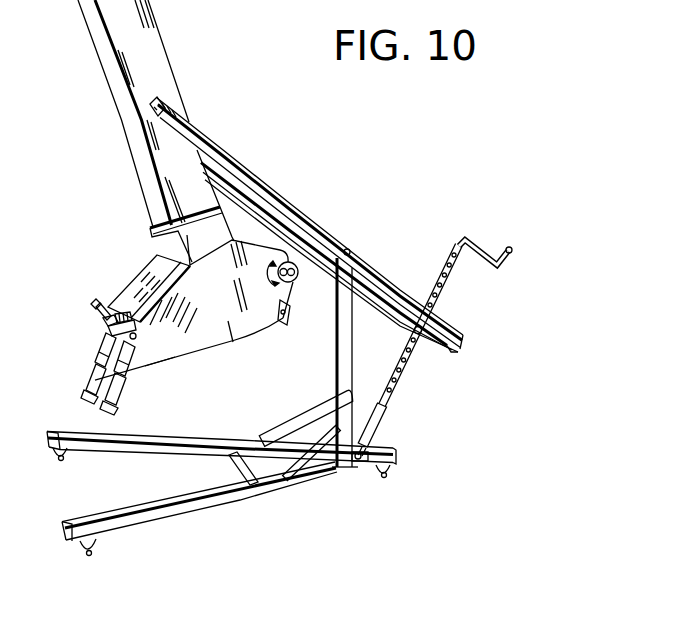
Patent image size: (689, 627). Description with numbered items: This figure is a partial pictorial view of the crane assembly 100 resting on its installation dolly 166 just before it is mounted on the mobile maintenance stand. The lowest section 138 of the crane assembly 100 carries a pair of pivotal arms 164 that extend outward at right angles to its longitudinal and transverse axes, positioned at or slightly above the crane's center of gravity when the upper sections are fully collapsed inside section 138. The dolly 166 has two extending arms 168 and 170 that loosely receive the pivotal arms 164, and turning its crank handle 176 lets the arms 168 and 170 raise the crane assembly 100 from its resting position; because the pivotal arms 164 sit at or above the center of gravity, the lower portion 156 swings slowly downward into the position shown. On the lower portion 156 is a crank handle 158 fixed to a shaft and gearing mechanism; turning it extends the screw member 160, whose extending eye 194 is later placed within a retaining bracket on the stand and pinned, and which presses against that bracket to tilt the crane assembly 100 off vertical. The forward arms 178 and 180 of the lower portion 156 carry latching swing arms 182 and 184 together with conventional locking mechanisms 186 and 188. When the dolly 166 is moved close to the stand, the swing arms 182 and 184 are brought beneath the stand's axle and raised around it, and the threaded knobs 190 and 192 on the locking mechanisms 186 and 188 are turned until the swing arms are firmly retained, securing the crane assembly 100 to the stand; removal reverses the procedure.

The crane assembly 100 is at (173, 72).
The lowest section 138 is at (122, 46).
The lower portion 156 is at (194, 320).
The crank handle 158 is at (297, 281).
The screw member 160 is at (233, 342).
The pivotal arms 164 is at (170, 107).
The dolly 166 is at (372, 238).
The extending arm 168 is at (230, 200).
The extending arm 170 is at (292, 208).
The crank handle 176 is at (482, 253).
The forward arm 178 is at (143, 269).
The forward arm 180 is at (160, 353).
The latching swing arm 182 is at (105, 398).
The latching swing arm 184 is at (133, 393).
The locking mechanism 186 is at (97, 309).
The locking mechanism 188 is at (128, 328).
The threaded knob 190 is at (100, 303).
The threaded knob 192 is at (110, 327).
The extending eye 194 is at (289, 328).